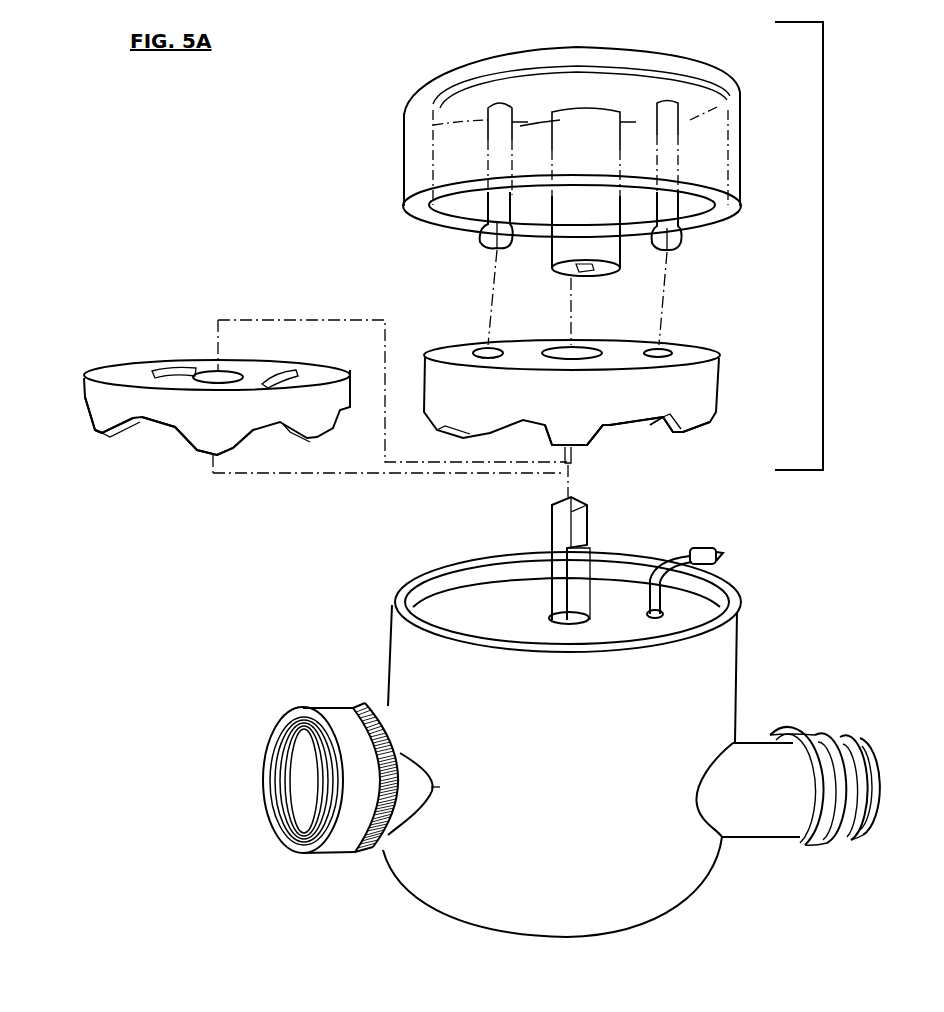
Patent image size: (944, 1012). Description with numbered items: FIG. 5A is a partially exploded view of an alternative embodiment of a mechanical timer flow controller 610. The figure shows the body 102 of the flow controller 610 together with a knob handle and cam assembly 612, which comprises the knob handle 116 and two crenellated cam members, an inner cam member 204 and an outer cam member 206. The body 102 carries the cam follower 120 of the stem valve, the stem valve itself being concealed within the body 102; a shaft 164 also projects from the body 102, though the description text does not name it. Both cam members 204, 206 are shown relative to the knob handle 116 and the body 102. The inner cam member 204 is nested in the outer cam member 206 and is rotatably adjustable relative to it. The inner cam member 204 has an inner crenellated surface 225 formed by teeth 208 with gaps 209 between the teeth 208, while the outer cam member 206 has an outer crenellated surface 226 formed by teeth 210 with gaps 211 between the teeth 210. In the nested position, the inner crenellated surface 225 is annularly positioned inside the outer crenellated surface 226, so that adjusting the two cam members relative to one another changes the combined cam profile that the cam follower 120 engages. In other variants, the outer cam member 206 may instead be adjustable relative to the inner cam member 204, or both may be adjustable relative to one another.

The body 102 is at (678, 892).
The knob handle 116 is at (735, 118).
The cam follower 120 is at (730, 550).
The shaft 164 is at (550, 530).
The inner cam member 204 is at (217, 407).
The outer cam member 206 is at (572, 401).
The teeth 208 is at (100, 432).
The gaps 209 is at (145, 420).
The teeth 210 is at (712, 424).
The gaps 211 is at (617, 424).
The inner crenellated surface 225 is at (163, 446).
The outer crenellated surface 226 is at (648, 432).
The flow controller 610 is at (278, 213).
The knob handle and cam assembly 612 is at (824, 212).